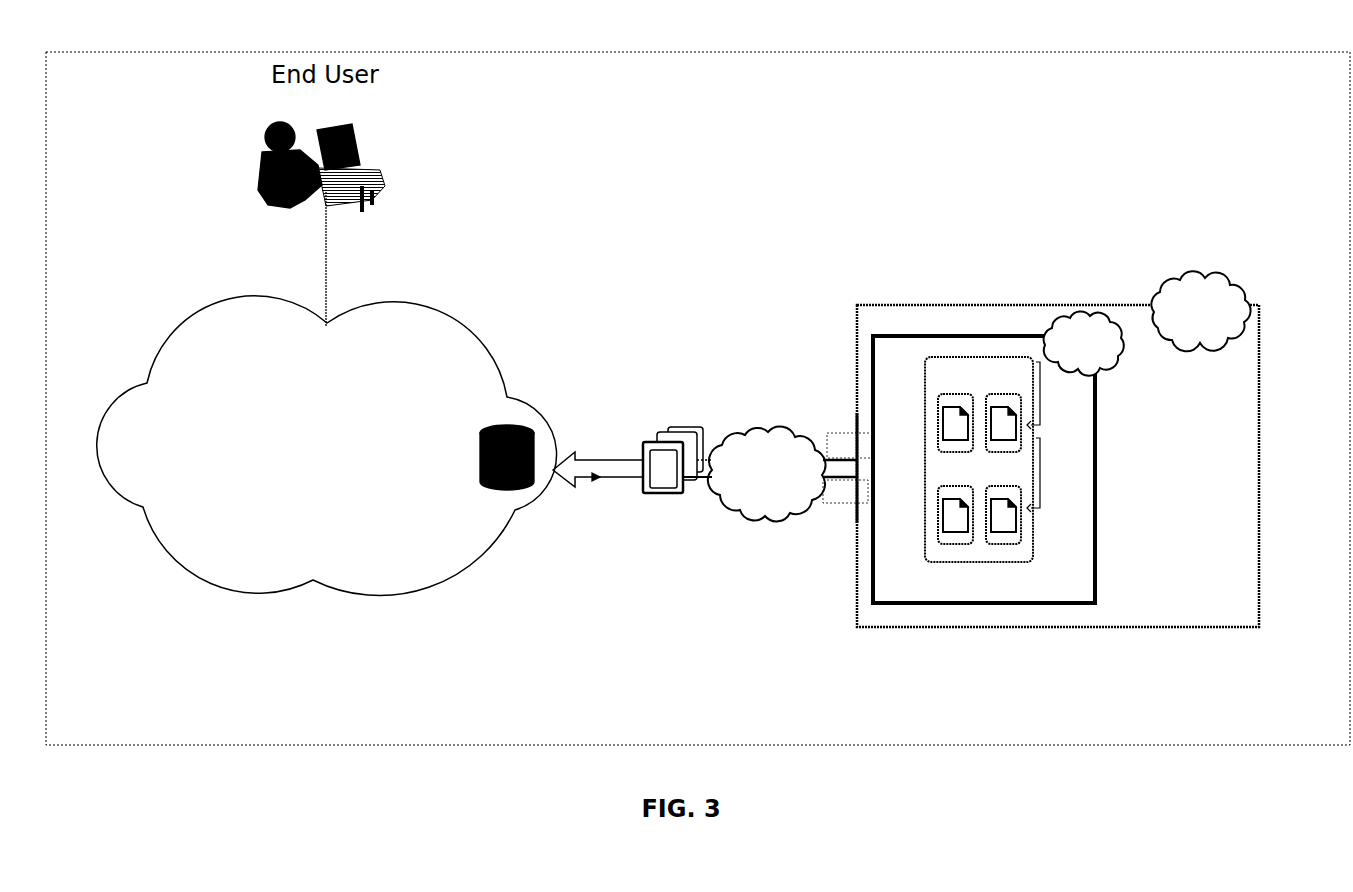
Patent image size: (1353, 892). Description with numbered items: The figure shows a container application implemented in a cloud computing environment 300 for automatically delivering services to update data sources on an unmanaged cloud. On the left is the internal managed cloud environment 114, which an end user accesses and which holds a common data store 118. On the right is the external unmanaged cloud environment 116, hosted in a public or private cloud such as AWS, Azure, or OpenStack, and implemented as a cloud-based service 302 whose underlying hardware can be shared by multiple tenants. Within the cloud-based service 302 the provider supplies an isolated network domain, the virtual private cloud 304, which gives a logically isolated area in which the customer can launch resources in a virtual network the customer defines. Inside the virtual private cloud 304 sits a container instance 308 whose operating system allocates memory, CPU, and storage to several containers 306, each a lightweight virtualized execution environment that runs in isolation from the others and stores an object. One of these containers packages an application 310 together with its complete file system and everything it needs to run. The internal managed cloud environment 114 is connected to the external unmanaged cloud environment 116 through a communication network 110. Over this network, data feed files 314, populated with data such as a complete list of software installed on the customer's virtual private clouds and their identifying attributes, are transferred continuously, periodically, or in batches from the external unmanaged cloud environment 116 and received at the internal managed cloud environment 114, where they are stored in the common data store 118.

The cloud computing environment 300 is at (673, 128).
The internal managed cloud environment 114 is at (327, 446).
The common data store 118 is at (522, 494).
The data feed file 314 is at (658, 497).
The communication network 110 is at (764, 431).
The cloud-based service 302 is at (1058, 466).
The external unmanaged cloud environment 116 is at (1246, 271).
The virtual private cloud 304 is at (1057, 437).
The container instance 308 is at (979, 459).
The container 306 is at (962, 451).
The application 310 is at (957, 520).